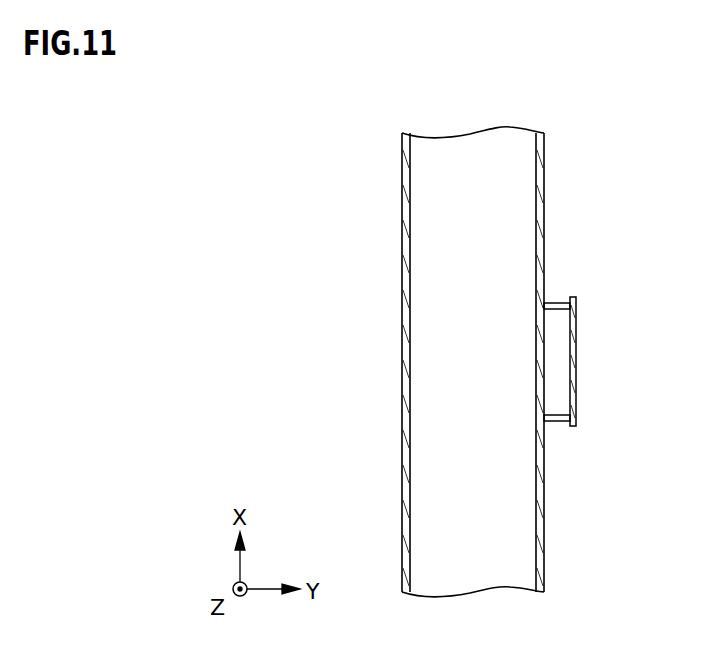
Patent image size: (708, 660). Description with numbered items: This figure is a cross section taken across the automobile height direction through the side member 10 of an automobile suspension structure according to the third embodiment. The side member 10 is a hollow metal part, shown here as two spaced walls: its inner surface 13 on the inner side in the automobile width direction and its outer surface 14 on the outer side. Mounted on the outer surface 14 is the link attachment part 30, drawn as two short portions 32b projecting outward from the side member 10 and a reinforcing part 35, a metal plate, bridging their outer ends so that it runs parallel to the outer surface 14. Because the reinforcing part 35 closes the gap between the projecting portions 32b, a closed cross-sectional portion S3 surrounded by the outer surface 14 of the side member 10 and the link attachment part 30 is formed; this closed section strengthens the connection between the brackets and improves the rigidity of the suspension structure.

The side member 10 is at (457, 362).
The inner surface 13 is at (404, 357).
The outer surface 14 is at (544, 530).
The link attachment part 30 is at (600, 361).
The leg portion 32b is at (555, 304).
The reinforcing part 35 is at (576, 359).
The closed cross-sectional portion S3 is at (557, 350).